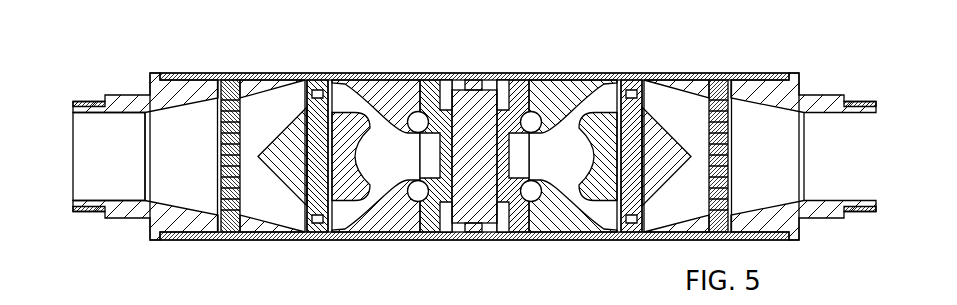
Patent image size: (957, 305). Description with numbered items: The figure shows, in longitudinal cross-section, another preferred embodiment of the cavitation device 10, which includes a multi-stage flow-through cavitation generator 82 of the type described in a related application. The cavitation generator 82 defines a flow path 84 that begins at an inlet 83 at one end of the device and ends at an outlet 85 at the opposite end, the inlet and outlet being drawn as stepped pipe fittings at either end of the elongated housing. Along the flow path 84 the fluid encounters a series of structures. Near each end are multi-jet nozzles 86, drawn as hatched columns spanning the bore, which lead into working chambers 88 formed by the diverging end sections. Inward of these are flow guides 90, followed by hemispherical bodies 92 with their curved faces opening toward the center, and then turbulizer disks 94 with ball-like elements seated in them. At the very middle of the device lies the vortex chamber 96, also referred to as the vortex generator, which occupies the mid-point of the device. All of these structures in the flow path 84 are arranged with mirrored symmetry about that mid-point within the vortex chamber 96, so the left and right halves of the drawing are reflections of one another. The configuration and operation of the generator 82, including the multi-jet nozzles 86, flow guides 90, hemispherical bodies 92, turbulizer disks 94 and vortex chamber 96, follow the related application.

The cavitation device 10 is at (273, 52).
The multi-stage cavitation generator 82 is at (474, 139).
The inlet 83 is at (69, 147).
The flow path 84 is at (86, 157).
The outlet 85 is at (878, 153).
The multi-jet nozzles 86 is at (479, 137).
The working chambers 88 is at (474, 172).
The flow guides 90 is at (489, 131).
The hemispherical bodies 92 is at (474, 178).
The turbulizer disks 94 is at (474, 185).
The vortex chamber 96 is at (472, 178).